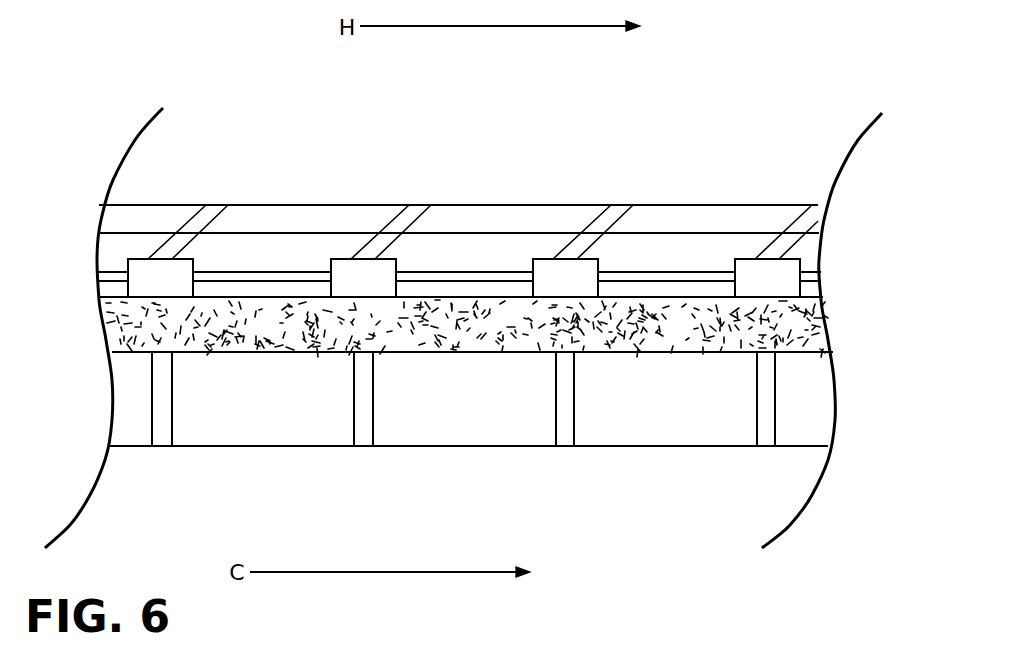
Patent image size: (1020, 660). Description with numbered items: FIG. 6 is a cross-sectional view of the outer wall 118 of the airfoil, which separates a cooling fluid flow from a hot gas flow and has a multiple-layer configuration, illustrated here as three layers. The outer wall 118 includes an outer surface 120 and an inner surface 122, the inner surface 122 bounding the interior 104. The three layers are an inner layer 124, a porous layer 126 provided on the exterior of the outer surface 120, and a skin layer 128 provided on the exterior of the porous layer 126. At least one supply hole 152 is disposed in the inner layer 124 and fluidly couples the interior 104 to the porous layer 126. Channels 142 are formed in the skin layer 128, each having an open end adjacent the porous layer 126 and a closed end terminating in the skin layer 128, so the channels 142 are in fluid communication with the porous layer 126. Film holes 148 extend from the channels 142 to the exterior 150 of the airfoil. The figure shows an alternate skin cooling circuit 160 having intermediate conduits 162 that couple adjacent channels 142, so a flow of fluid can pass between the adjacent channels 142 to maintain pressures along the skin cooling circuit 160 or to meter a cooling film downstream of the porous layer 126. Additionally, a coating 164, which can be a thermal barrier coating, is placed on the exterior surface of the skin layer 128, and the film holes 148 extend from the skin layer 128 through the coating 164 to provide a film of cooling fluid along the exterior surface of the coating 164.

The interior 104 is at (513, 549).
The outer wall 118 is at (236, 121).
The outer surface 120 is at (393, 352).
The inner surface 122 is at (583, 446).
The inner layer 124 is at (848, 415).
The porous layer 126 is at (838, 322).
The skin layer 128 is at (833, 238).
The channel 142 is at (196, 262).
The film hole 148 is at (192, 220).
The exterior 150 is at (497, 96).
The supply hole 152 is at (354, 417).
The alternate skin cooling circuit 160 is at (90, 255).
The intermediate conduit 162 is at (295, 272).
The coating 164 is at (268, 206).